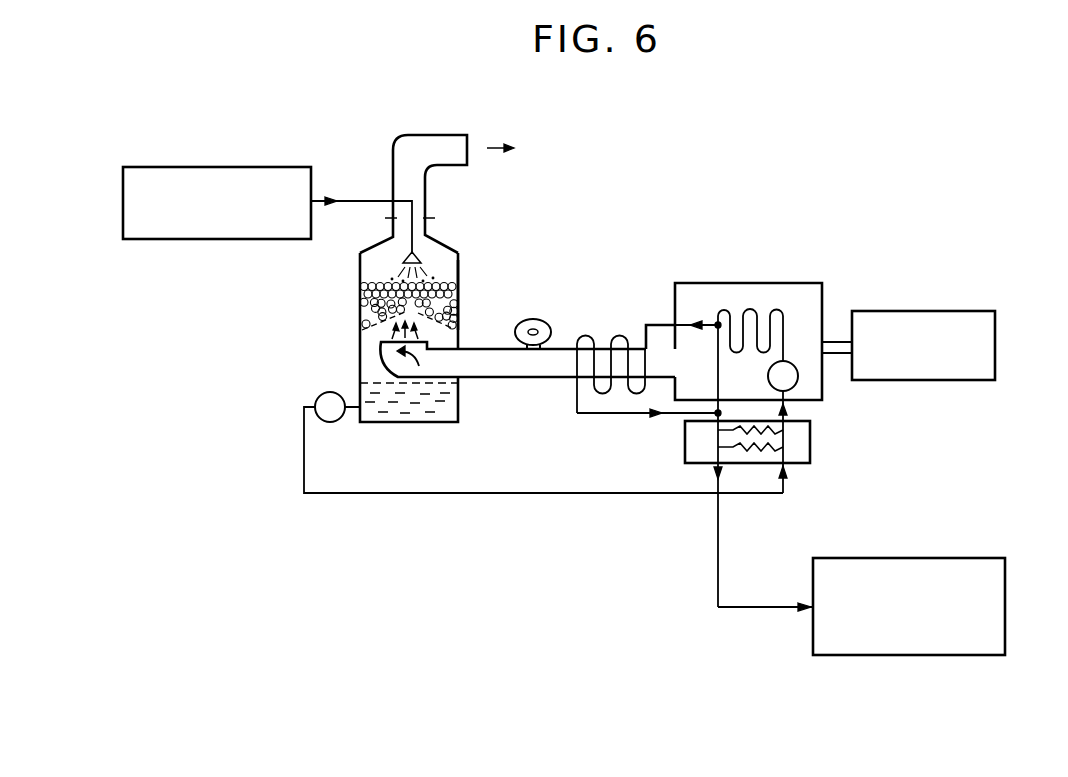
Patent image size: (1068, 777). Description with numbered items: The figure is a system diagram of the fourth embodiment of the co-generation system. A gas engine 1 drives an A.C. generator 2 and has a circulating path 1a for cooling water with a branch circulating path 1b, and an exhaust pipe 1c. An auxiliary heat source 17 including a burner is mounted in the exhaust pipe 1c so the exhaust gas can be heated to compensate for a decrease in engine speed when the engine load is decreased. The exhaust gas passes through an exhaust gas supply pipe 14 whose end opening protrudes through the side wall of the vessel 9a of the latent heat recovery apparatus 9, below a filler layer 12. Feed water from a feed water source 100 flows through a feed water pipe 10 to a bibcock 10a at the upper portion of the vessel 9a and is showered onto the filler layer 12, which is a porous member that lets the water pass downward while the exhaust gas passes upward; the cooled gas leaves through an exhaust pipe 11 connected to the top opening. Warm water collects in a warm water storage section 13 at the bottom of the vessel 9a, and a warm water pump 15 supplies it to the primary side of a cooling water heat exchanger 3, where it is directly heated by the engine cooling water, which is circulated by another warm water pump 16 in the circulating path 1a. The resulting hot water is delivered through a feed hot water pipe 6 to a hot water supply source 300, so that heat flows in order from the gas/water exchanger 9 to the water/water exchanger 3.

The feed water source 100 is at (256, 167).
The feed water pipe 10 is at (360, 201).
The bibcock 10a is at (408, 258).
The latent heat recovery apparatus 9 is at (456, 236).
The vessel 9a is at (458, 263).
The exhaust pipe 11 is at (437, 135).
The filler layer 12 is at (360, 305).
The exhaust pipe 1c is at (497, 349).
The auxiliary heat source 17 is at (545, 292).
The branch circulating path 1b is at (657, 325).
The gas engine 1 is at (822, 288).
The warm water pump 16 is at (792, 365).
The A.C. generator 2 is at (995, 320).
The circulating path 1a is at (718, 385).
The cooling water heat exchanger 3 is at (812, 456).
The feed hot water pipe 6 is at (719, 545).
The hot water supply source 300 is at (948, 537).
The warm water pump 15 is at (330, 392).
The exhaust gas supply pipe 14 is at (443, 383).
The warm water storage section 13 is at (453, 412).